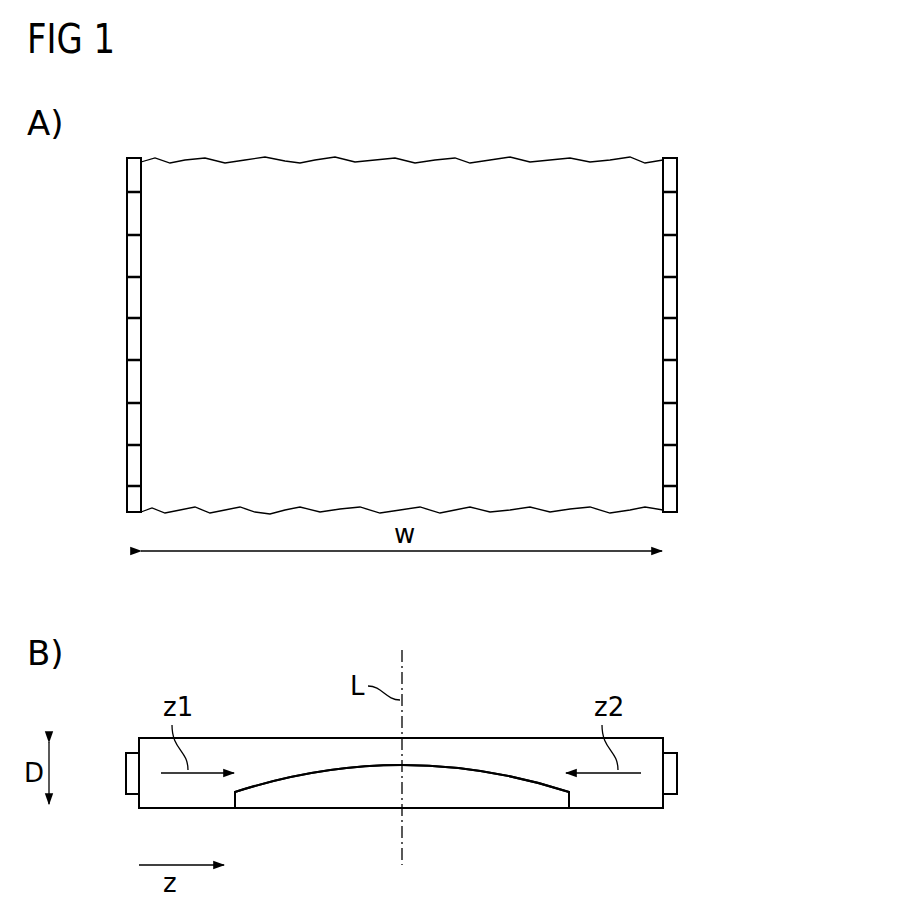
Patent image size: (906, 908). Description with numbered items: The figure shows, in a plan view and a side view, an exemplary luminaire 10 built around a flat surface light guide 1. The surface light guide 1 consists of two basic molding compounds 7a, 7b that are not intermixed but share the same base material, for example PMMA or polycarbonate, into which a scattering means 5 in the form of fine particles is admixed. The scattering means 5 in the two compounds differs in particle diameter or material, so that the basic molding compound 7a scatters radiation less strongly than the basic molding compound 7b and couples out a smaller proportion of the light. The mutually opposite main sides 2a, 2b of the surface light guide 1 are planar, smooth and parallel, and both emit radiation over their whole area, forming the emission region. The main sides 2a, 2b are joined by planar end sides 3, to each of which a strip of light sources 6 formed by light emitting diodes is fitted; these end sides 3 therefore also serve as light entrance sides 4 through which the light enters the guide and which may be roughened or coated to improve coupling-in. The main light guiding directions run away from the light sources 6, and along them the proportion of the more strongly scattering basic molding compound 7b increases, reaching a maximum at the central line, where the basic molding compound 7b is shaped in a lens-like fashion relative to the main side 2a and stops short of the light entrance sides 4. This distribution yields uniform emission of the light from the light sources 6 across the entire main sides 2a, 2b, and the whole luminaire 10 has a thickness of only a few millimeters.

The surface light guide 1 is at (472, 164).
The main side 2a is at (295, 172).
The main side 2b is at (628, 808).
The end side 3 is at (139, 798).
The light entrance side 4 is at (360, 792).
The scattering means 5 is at (248, 752).
The light sources 6 is at (131, 256).
The basic molding compound 7a is at (248, 752).
The basic molding compound 7b is at (325, 797).
The luminaire 10 is at (733, 182).